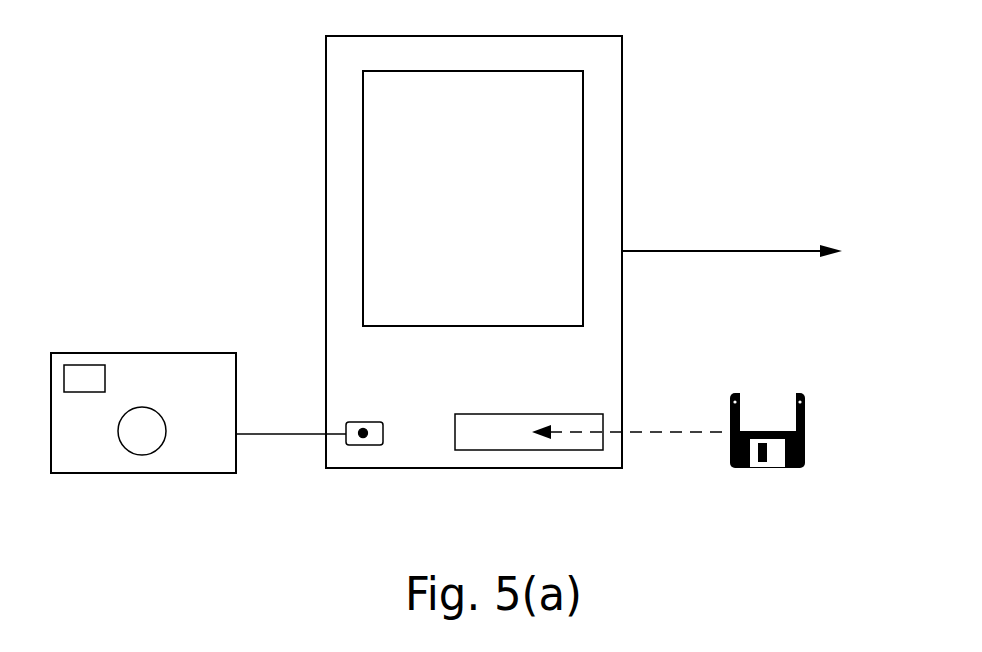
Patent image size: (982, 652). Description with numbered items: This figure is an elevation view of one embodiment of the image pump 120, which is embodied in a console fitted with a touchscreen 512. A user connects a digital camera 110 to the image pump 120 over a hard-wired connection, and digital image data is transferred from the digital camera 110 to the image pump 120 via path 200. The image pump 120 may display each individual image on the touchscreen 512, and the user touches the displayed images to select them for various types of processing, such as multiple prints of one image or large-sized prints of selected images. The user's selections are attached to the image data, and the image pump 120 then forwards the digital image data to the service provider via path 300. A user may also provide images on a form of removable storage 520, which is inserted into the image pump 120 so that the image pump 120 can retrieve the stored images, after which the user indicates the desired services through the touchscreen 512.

The digital camera 110 is at (142, 353).
The image pump 120 is at (477, 468).
The path 200 is at (293, 434).
The path 300 is at (714, 251).
The touchscreen 512 is at (583, 93).
The removable storage 520 is at (805, 402).